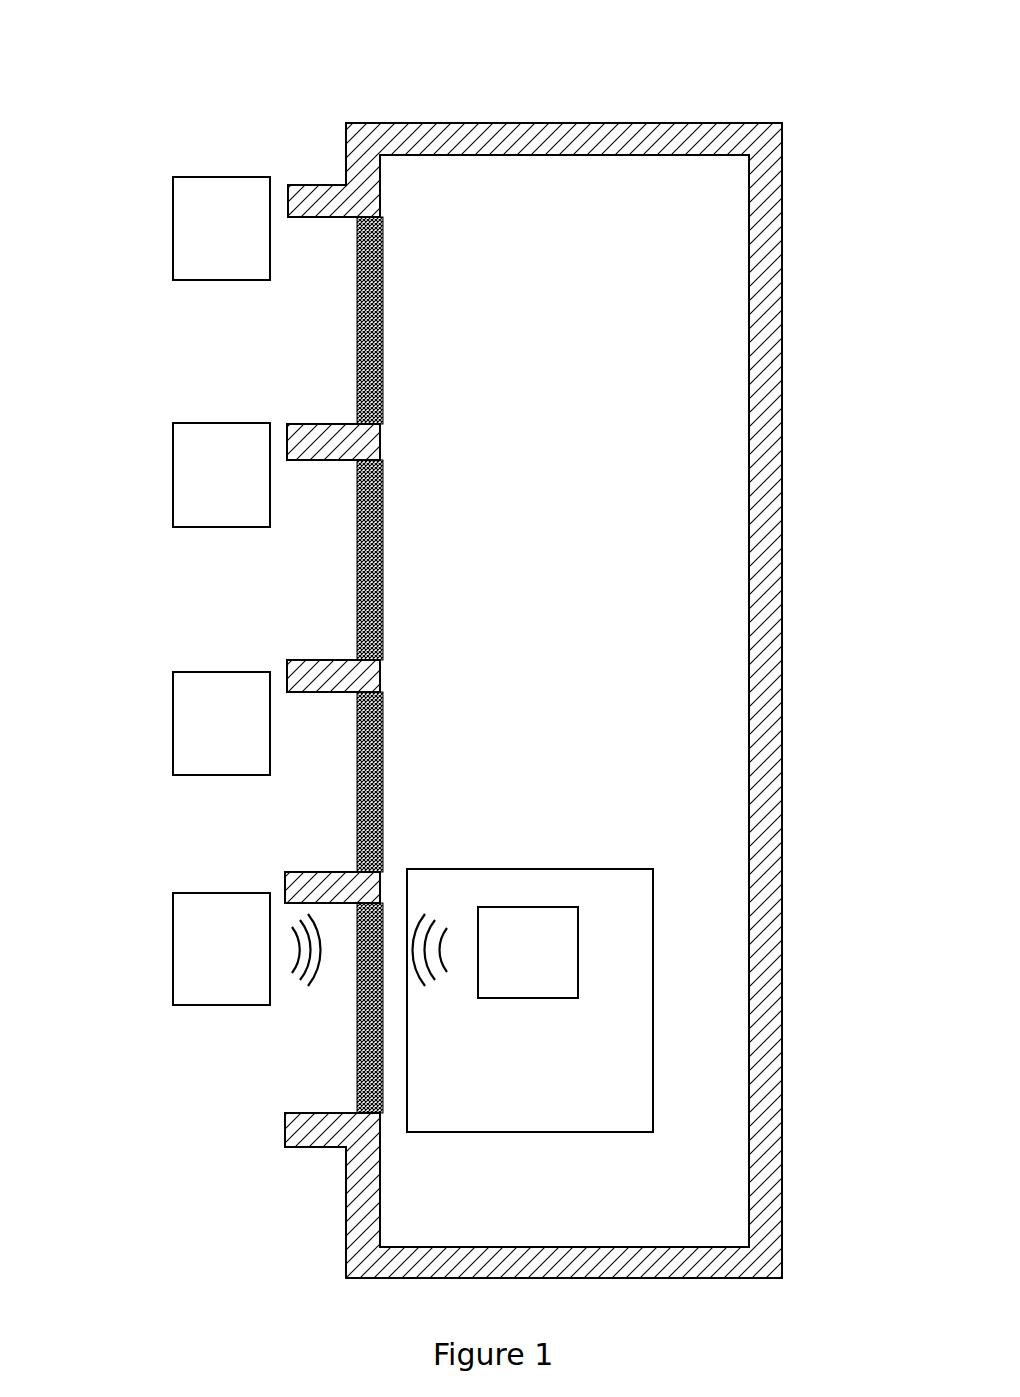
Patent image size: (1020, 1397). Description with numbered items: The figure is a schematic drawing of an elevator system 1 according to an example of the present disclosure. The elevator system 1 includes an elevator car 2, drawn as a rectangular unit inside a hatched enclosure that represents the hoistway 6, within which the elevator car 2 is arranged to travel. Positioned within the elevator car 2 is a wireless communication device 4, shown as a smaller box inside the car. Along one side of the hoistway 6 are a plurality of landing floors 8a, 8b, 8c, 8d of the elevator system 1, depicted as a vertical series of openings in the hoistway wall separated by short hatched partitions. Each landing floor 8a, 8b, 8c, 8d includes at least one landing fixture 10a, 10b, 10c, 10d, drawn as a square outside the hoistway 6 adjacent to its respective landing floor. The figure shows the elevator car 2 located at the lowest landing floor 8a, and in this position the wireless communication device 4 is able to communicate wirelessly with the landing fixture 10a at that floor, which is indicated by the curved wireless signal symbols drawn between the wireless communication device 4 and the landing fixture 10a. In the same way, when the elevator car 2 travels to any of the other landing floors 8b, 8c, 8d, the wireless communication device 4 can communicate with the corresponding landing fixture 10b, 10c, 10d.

The elevator system 1 is at (477, 639).
The elevator car 2 is at (639, 949).
The wireless communication device 4 is at (528, 907).
The hoistway 6 is at (728, 441).
The landing floor 8a is at (302, 1062).
The landing floor 8b is at (397, 780).
The landing floor 8c is at (397, 573).
The landing floor 8d is at (397, 320).
The landing fixture 10a is at (173, 950).
The landing fixture 10b is at (173, 703).
The landing fixture 10c is at (173, 463).
The landing fixture 10d is at (173, 210).